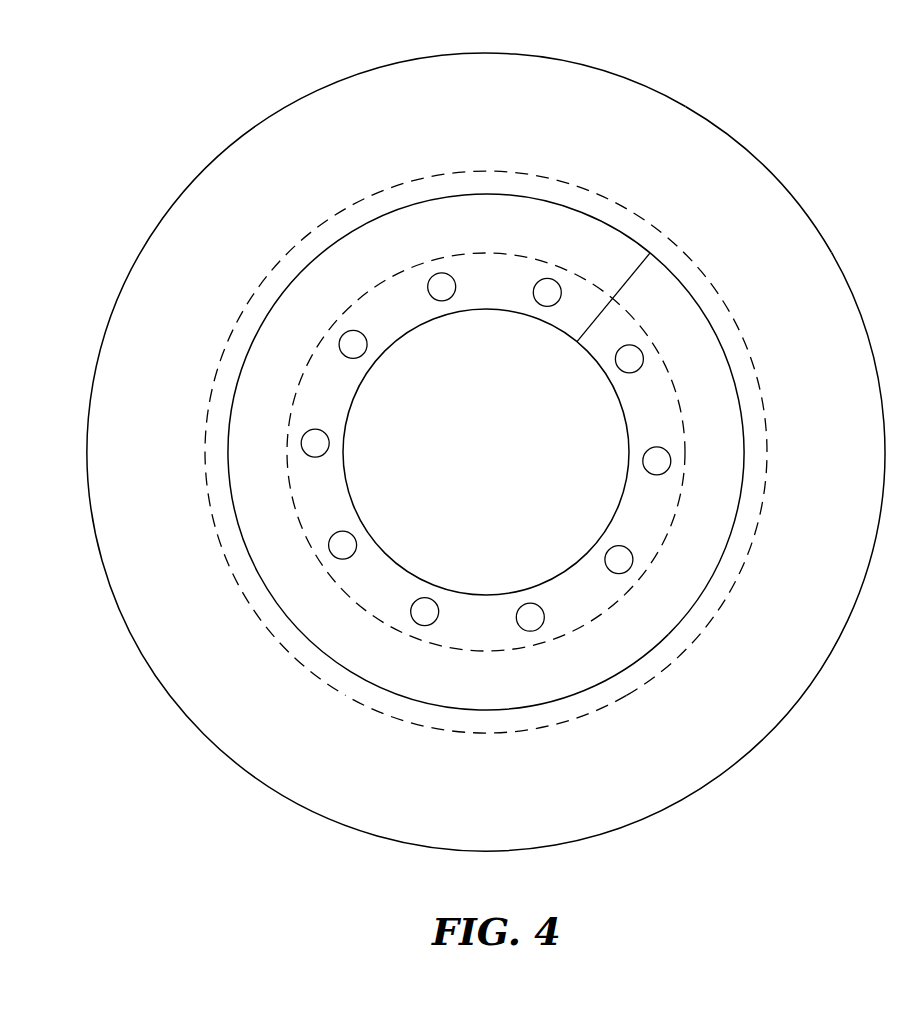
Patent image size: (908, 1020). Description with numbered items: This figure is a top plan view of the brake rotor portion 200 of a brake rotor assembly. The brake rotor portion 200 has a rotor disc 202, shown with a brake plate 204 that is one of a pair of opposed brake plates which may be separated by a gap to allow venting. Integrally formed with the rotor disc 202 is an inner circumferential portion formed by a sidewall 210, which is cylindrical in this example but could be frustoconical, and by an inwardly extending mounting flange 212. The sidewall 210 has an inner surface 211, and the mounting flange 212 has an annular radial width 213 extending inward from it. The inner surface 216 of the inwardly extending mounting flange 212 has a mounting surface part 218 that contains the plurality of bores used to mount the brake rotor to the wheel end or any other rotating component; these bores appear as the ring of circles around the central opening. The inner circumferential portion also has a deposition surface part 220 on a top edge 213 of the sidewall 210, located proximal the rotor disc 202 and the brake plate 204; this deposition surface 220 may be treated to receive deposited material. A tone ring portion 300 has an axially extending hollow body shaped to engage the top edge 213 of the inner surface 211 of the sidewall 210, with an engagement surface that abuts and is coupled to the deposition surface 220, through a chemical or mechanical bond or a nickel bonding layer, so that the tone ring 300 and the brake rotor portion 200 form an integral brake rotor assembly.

The brake rotor portion 200 is at (90, 117).
The rotor disc 202 is at (688, 89).
The brake plate 204 is at (767, 198).
The sidewall 210 is at (740, 405).
The inner surface 211 is at (630, 660).
The inwardly extending mounting flange 212 is at (422, 328).
The annular radial width 213 is at (640, 271).
The inner surface 216 is at (728, 466).
The mounting surface part 218 is at (630, 407).
The deposition surface part 220 is at (703, 633).
The tone ring portion 300 is at (552, 717).